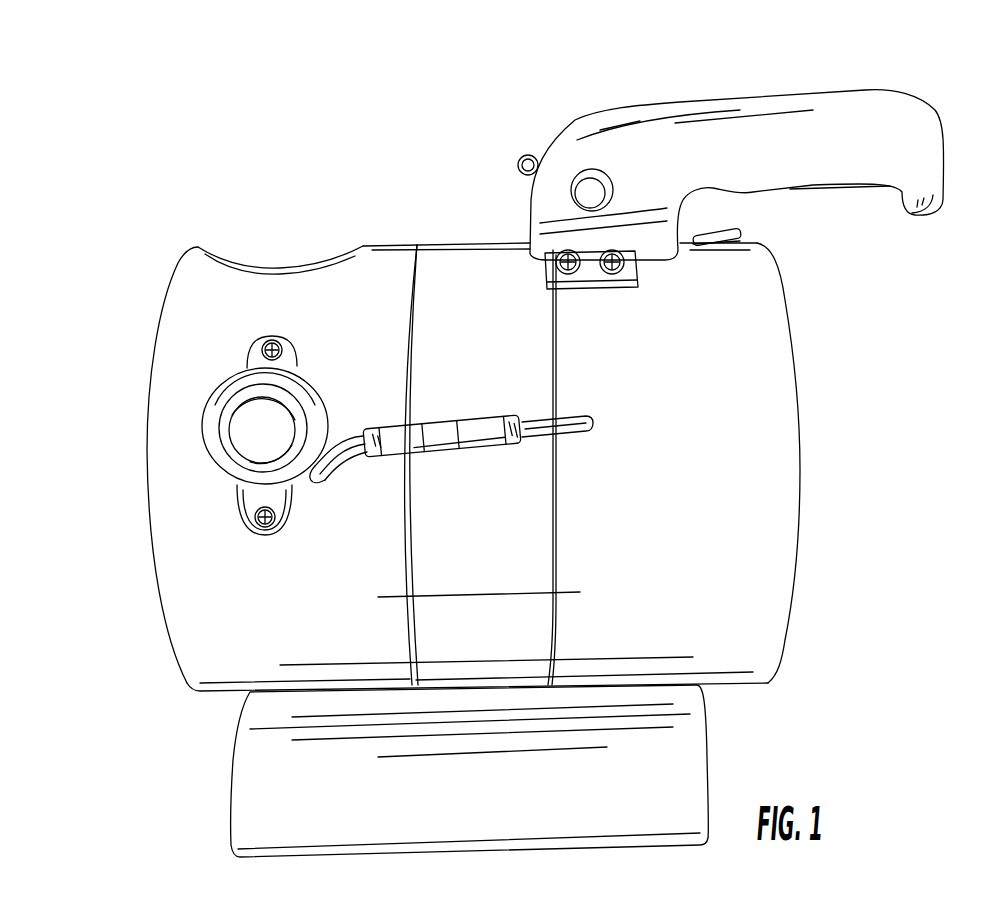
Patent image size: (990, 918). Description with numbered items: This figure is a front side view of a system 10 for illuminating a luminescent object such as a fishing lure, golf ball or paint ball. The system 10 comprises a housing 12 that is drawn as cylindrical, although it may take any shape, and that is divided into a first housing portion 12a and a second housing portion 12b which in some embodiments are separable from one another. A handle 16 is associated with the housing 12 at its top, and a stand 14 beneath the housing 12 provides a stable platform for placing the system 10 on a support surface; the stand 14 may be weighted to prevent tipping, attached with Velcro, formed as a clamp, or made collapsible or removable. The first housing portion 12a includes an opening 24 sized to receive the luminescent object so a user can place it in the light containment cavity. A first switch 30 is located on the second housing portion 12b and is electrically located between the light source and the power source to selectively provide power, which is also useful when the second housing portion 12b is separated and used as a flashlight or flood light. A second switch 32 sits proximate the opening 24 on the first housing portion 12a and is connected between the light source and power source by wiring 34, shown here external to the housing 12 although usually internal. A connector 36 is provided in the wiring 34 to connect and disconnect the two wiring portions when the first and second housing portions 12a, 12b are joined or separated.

The system 10 is at (505, 103).
The housing 12 is at (488, 447).
The first housing portion 12a is at (195, 275).
The second housing portion 12b is at (763, 393).
The stand 14 is at (692, 755).
The handle 16 is at (895, 108).
The opening 24 is at (290, 252).
The first switch 30 is at (735, 233).
The second switch 32 is at (247, 418).
The wiring 34 is at (567, 420).
The connector 36 is at (433, 432).